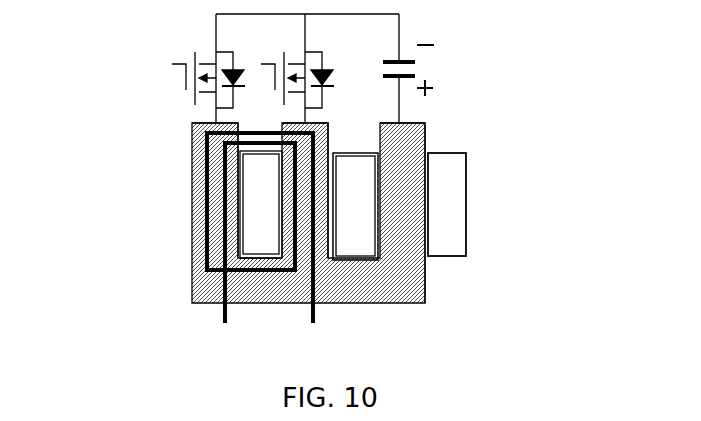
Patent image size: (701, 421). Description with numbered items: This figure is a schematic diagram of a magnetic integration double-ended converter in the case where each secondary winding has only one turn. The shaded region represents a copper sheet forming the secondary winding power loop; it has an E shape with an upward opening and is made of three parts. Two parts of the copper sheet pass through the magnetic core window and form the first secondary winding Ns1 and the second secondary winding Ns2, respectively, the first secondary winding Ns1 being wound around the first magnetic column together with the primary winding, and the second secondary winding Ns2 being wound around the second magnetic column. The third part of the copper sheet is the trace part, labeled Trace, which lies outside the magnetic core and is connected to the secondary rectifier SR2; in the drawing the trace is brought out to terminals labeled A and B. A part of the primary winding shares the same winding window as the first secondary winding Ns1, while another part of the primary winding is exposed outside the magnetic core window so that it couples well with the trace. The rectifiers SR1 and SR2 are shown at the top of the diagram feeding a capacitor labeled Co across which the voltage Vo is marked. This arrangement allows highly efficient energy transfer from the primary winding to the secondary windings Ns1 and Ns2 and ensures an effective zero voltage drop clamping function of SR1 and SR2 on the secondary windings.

The secondary rectifier SR2 is at (207, 65).
The secondary rectifier SR1 is at (296, 65).
The output capacitor Co is at (390, 52).
The output voltage Vo is at (442, 70).
The trace part Trace is at (197, 175).
The second secondary winding Ns2 is at (403, 173).
The first secondary winding Ns1 is at (320, 214).
The trace terminal A is at (313, 329).
The trace terminal B is at (224, 329).